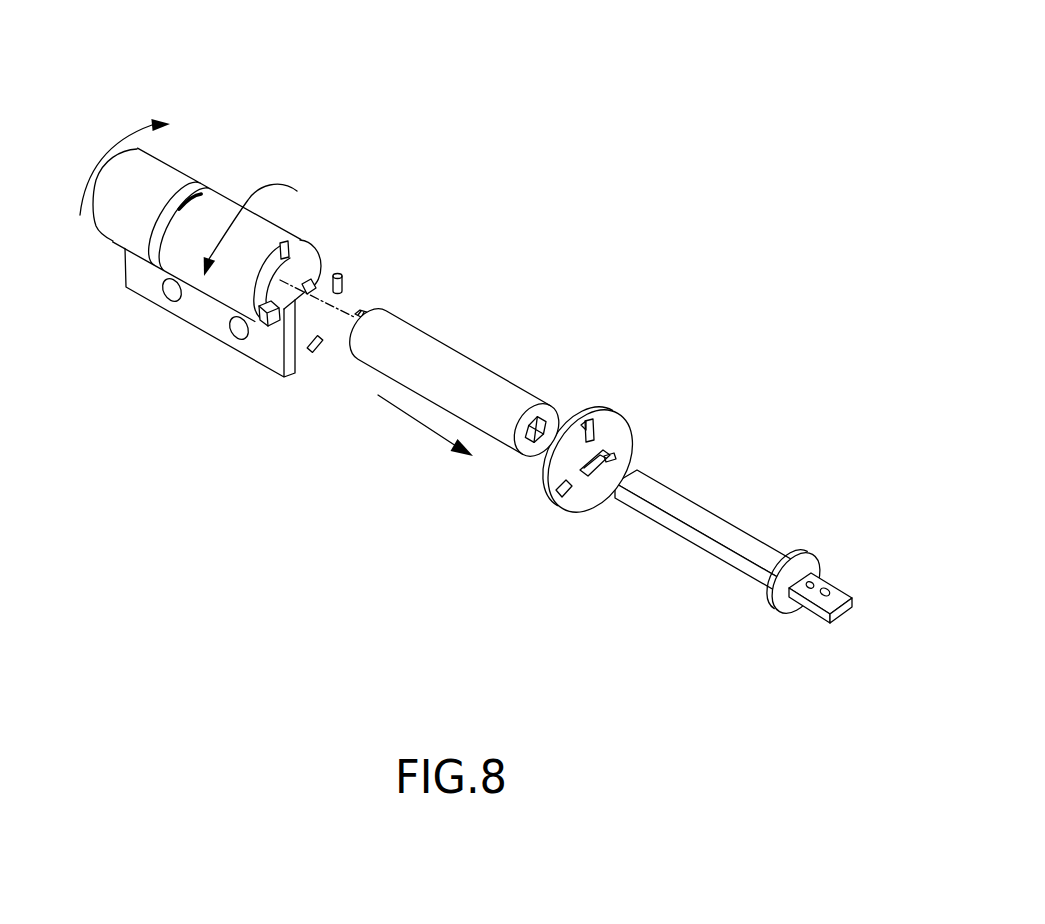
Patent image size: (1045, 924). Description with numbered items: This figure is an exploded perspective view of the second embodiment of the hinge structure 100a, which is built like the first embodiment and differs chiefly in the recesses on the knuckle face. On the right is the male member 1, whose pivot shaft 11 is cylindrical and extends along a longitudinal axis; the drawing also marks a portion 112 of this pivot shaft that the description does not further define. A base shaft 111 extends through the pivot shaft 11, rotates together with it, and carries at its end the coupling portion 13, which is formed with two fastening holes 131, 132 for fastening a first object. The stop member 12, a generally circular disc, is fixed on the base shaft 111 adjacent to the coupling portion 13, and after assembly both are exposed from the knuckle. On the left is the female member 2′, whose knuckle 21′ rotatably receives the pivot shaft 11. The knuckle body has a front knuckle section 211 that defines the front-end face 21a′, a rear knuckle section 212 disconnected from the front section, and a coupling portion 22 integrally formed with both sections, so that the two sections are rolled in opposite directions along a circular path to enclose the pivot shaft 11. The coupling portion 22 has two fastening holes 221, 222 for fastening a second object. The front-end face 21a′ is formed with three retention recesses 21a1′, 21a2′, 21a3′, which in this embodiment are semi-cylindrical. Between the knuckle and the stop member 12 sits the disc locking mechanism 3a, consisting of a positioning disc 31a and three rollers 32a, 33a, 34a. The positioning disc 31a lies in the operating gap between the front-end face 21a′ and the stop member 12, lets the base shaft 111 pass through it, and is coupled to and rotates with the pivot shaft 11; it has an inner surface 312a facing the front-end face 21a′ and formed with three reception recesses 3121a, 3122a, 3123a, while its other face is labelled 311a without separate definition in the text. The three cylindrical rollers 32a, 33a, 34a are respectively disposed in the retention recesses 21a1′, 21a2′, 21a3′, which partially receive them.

The hinge structure 100a is at (512, 140).
The female member 2′ is at (378, 110).
The knuckle 21′ is at (290, 205).
The front knuckle section 211 is at (252, 252).
The rear knuckle section 212 is at (143, 208).
The front-end face 21a′ is at (319, 262).
The retention recess 21a1′ is at (267, 319).
The retention recess 21a2′ is at (284, 244).
The retention recess 21a3′ is at (320, 258).
The coupling portion 22 is at (153, 293).
The fastening hole 221 is at (237, 336).
The fastening hole 222 is at (173, 300).
The roller 32a is at (316, 353).
The roller 33a is at (344, 283).
The roller 34a is at (368, 314).
The male member 1 is at (776, 466).
The pivot shaft 11 is at (502, 301).
The base shaft 111 is at (690, 532).
The core cylinder body 112 is at (488, 412).
The stop member 12 is at (782, 605).
The coupling portion 13 is at (834, 612).
The fastening hole 131 is at (826, 590).
The fastening hole 132 is at (809, 590).
The disc locking mechanism 3a is at (607, 318).
The positioning disc 31a is at (628, 406).
The disc front face 311a is at (587, 493).
The inner surface 312a is at (563, 413).
The reception recess 3121a is at (548, 492).
The reception recess 3122a is at (587, 422).
The reception recess 3123a is at (606, 460).